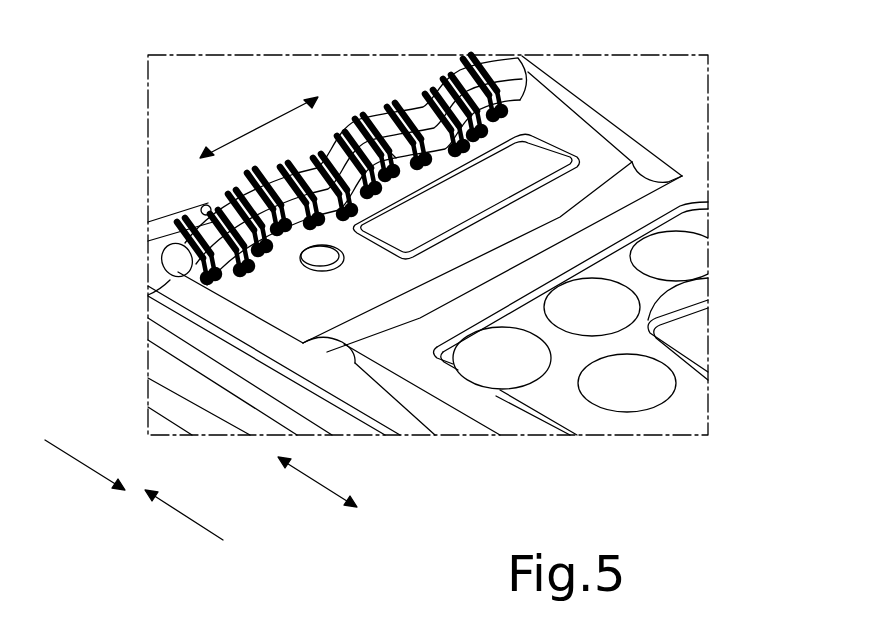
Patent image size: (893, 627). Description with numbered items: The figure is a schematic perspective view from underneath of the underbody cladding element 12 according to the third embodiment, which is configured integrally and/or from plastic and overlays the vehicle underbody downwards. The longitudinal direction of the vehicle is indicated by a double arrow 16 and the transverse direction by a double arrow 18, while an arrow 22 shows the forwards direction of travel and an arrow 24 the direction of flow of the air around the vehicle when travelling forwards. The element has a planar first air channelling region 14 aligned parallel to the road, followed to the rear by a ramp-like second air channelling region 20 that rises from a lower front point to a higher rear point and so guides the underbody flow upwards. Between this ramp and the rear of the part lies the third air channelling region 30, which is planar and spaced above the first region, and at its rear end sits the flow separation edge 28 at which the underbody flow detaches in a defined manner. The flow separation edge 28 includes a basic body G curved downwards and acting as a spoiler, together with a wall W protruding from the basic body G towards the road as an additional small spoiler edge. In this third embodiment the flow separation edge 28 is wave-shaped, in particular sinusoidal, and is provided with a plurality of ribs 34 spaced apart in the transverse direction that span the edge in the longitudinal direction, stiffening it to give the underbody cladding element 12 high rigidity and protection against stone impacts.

The underbody cladding element 12 is at (686, 188).
The first air channelling region 14 is at (695, 283).
The double arrow 16 is at (316, 487).
The double arrow 18 is at (245, 130).
The second air channelling region 20 is at (643, 180).
The arrow 22 is at (82, 463).
The arrow 24 is at (180, 514).
The flow separation edge 28 is at (508, 74).
The third air channelling region 30 is at (556, 150).
The ribs 34 is at (243, 256).
The basic body G is at (393, 155).
The wall W is at (437, 87).